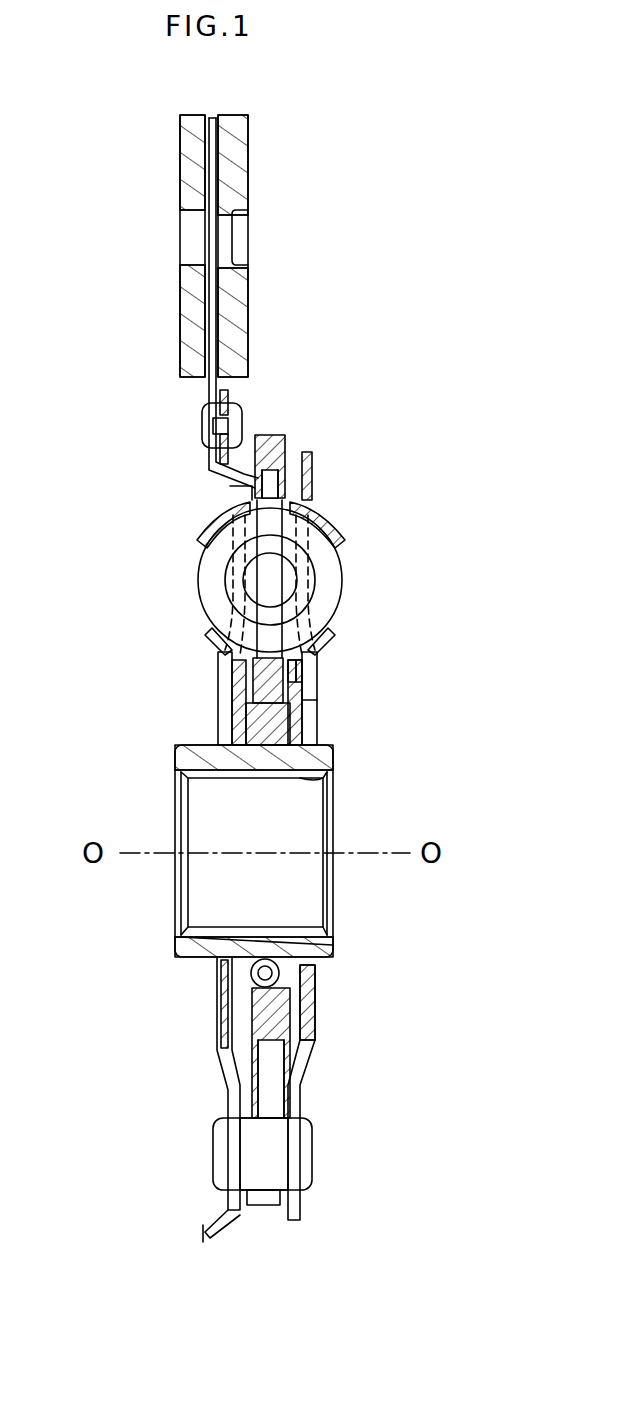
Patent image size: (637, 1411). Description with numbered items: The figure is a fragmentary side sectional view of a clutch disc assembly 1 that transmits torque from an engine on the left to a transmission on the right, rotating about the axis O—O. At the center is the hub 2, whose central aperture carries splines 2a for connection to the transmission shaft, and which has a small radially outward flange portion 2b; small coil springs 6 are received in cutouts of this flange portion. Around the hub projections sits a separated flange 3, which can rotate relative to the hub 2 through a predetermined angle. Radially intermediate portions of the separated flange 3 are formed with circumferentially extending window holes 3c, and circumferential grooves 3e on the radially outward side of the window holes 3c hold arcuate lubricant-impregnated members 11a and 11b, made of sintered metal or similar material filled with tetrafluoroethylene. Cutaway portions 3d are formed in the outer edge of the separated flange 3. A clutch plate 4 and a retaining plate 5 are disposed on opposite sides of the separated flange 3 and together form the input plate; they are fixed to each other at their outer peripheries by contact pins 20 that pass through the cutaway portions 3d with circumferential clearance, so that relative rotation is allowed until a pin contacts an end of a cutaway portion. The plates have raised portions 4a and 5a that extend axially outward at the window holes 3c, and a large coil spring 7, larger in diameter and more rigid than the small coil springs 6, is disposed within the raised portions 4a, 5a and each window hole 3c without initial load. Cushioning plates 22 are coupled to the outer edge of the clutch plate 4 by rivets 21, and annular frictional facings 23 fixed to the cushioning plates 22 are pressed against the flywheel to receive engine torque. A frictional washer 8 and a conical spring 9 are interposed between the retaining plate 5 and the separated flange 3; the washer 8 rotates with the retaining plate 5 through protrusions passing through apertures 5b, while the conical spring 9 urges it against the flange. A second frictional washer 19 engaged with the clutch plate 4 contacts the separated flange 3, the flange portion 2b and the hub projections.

The clutch disc assembly 1 is at (470, 357).
The hub 2 is at (330, 752).
The splines 2a is at (333, 790).
The flange portion 2b is at (215, 725).
The separated flange 3 is at (320, 1040).
The window holes 3c is at (322, 500).
The cutaway portions 3d is at (235, 1108).
The circumferential grooves 3e is at (286, 435).
The clutch plate 4 is at (216, 665).
The raised portions 4a is at (207, 535).
The retaining plate 5 is at (325, 658).
The raised portions 5a is at (335, 518).
The apertures 5b is at (320, 695).
The small coil springs 6 is at (335, 945).
The large coil spring 7 is at (350, 582).
The frictional washer 8 is at (318, 692).
The conical spring 9 is at (320, 685).
The lubricant-impregnated member 11a is at (312, 460).
The lubricant-impregnated member 11b is at (232, 485).
The second frictional washer 19 is at (225, 1010).
The contact pins 20 is at (310, 1155).
The rivets 21 is at (200, 418).
The cushioning plates 22 is at (183, 383).
The frictional facings 23 is at (183, 305).